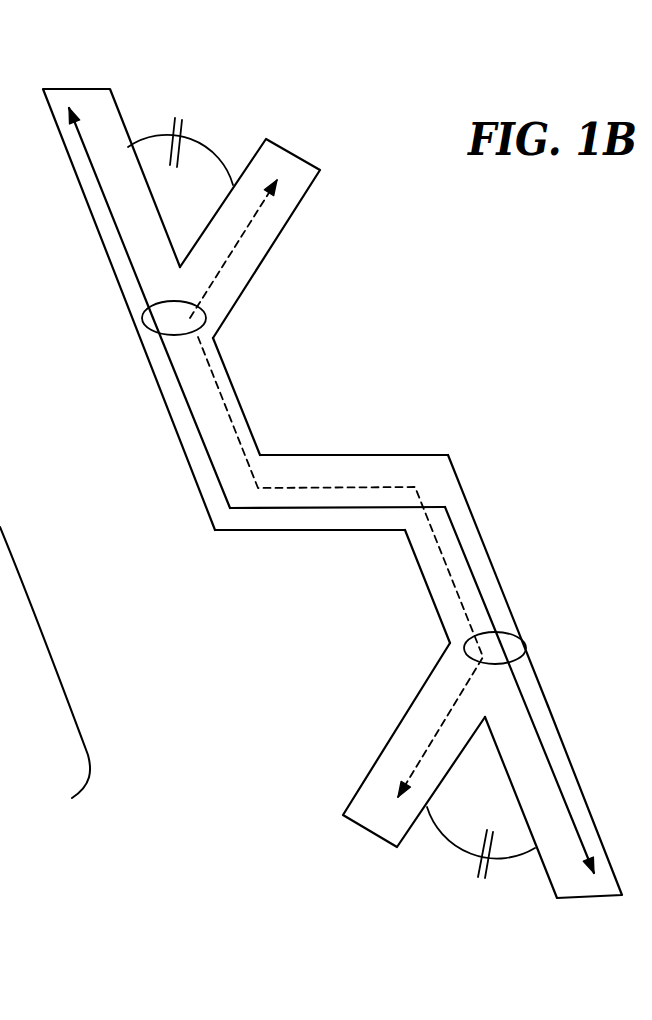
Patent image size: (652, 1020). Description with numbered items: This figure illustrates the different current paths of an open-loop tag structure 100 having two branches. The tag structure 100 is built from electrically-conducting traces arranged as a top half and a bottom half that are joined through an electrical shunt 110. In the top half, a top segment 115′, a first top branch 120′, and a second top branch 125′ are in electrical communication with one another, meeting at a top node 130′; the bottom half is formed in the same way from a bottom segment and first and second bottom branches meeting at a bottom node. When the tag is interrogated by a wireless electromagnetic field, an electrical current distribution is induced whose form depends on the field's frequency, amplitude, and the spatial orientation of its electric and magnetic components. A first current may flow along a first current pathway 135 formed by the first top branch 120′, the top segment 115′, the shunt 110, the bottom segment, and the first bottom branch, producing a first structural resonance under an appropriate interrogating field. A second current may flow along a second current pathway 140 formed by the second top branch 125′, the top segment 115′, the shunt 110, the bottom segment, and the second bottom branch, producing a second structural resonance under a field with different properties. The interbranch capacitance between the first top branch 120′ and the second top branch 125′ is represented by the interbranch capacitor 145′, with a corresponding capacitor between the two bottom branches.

The tag structure 100 is at (0, 420).
The electrical shunt 110 is at (393, 455).
The top segment 115′ is at (238, 405).
The first top branch 120′ is at (122, 125).
The second top branch 125′ is at (322, 173).
The top node 130′ is at (142, 318).
The first current pathway 135 is at (465, 554).
The second current pathway 140 is at (238, 248).
The interbranch capacitor 145′ is at (200, 143).